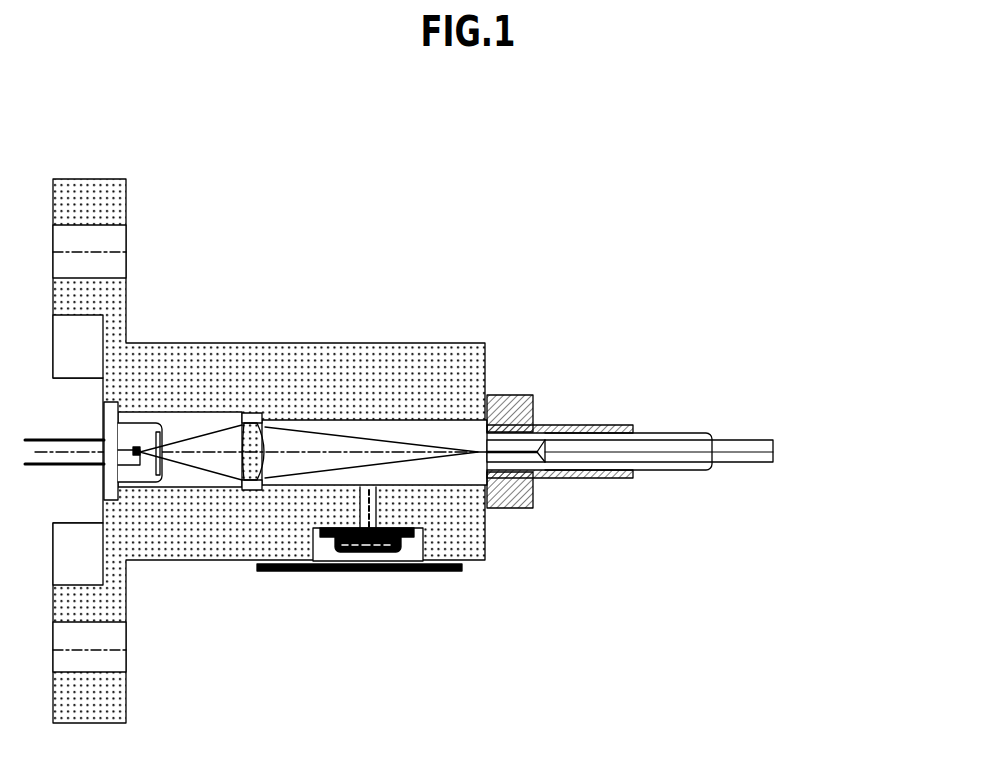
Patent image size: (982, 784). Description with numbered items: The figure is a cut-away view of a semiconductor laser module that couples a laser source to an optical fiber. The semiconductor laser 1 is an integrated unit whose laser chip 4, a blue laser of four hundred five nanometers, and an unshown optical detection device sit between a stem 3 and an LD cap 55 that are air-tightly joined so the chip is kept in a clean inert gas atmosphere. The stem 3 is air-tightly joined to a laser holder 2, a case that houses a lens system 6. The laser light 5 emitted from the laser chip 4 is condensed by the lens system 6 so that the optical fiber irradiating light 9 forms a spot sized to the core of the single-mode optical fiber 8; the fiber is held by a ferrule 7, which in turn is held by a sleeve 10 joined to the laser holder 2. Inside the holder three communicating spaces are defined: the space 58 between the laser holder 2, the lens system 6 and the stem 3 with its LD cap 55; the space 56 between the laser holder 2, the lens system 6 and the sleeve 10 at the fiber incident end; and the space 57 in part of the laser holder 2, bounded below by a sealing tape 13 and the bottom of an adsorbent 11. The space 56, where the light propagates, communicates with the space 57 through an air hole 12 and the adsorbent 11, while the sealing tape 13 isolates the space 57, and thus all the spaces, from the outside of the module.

The semiconductor laser 1 is at (123, 487).
The laser holder 2 is at (267, 363).
The stem 3 is at (115, 415).
The laser chip 4 is at (141, 413).
The laser light 5 is at (215, 445).
The lens system 6 is at (263, 427).
The ferrule 7 is at (707, 433).
The optical fiber 8 is at (770, 440).
The optical fiber irradiating light 9 is at (388, 437).
The sleeve 10 is at (505, 405).
The adsorbent 11 is at (378, 550).
The air hole 12 is at (355, 552).
The sealing tape 13 is at (271, 572).
The LD cap 55 is at (152, 482).
The space 56 is at (460, 470).
The space 57 is at (413, 540).
The space 58 is at (177, 422).